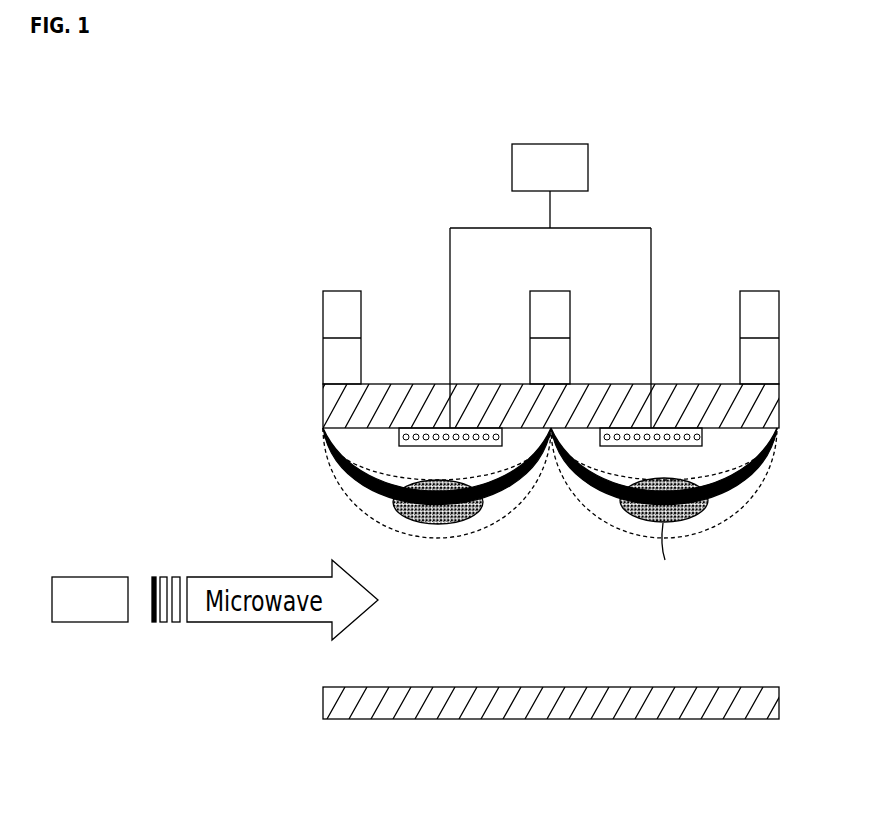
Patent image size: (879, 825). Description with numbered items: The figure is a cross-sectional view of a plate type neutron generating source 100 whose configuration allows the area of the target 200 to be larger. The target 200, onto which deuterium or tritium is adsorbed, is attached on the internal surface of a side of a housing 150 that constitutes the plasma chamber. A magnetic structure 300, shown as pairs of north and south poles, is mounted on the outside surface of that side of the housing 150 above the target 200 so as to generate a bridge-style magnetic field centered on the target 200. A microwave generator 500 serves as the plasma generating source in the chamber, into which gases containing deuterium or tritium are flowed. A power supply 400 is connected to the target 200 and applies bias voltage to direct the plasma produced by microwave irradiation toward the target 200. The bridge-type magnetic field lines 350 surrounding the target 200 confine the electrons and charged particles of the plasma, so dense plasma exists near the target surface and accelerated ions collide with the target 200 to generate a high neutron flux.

The plate type neutron generating source 100 is at (241, 97).
The housing 150 is at (323, 408).
The target 200 is at (690, 428).
The magnetic structure 300 is at (779, 315).
The bridge-type magnetic field lines 350 is at (745, 478).
The power supply 400 is at (550, 286).
The microwave generator 500 is at (90, 599).